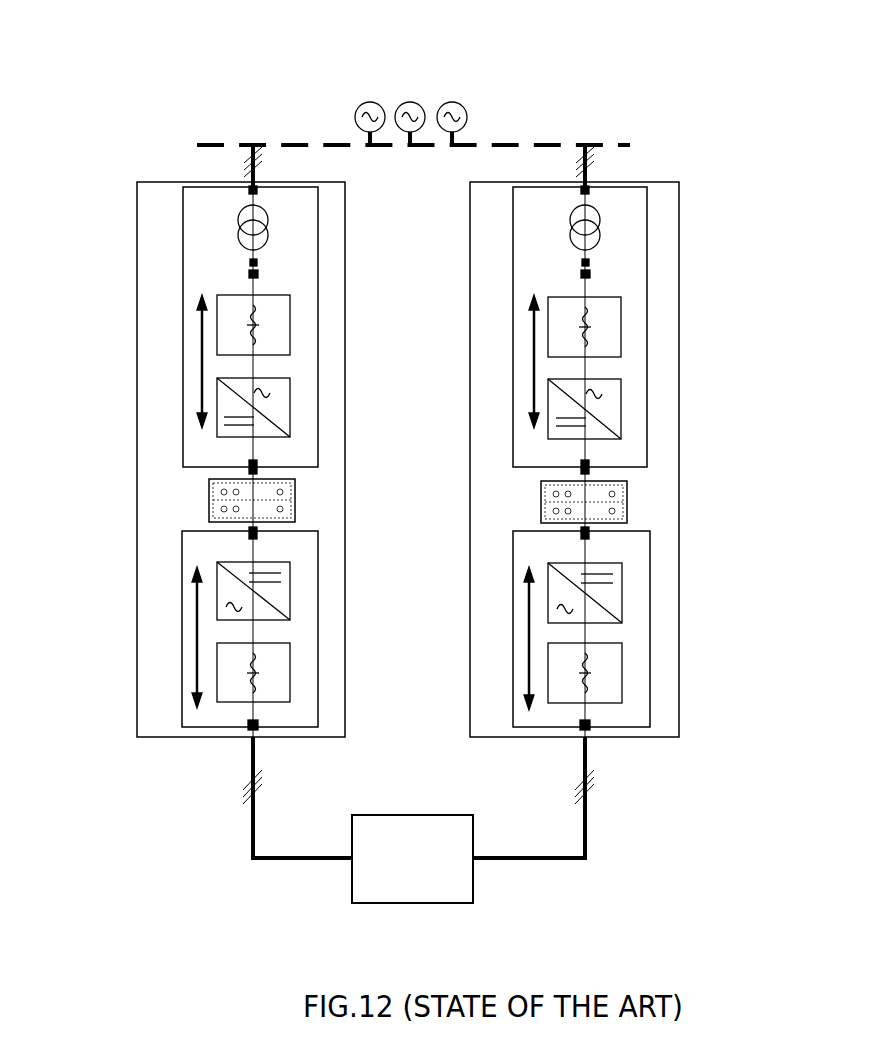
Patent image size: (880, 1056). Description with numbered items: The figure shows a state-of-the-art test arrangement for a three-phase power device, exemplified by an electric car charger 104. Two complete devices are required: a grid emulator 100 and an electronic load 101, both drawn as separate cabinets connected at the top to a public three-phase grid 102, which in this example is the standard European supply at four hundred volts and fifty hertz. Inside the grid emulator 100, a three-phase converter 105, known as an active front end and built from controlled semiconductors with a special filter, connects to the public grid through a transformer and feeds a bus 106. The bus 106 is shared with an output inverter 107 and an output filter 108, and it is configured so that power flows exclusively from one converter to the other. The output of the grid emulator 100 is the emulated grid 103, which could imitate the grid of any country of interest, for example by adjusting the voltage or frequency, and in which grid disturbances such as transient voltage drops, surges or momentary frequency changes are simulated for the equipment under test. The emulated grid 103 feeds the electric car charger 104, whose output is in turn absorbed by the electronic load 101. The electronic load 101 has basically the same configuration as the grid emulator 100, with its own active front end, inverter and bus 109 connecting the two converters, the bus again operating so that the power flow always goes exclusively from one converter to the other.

The grid emulator 100 is at (137, 288).
The electronic load 101 is at (680, 263).
The three-phase grid 102 is at (465, 143).
The emulated grid 103 is at (252, 858).
The electric car charger 104 is at (362, 903).
The three-phase converter 105 is at (183, 418).
The bus 106 is at (208, 488).
The output inverter 107 is at (217, 600).
The output filter 108 is at (217, 662).
The isolated DC/DC converter 109 is at (628, 500).